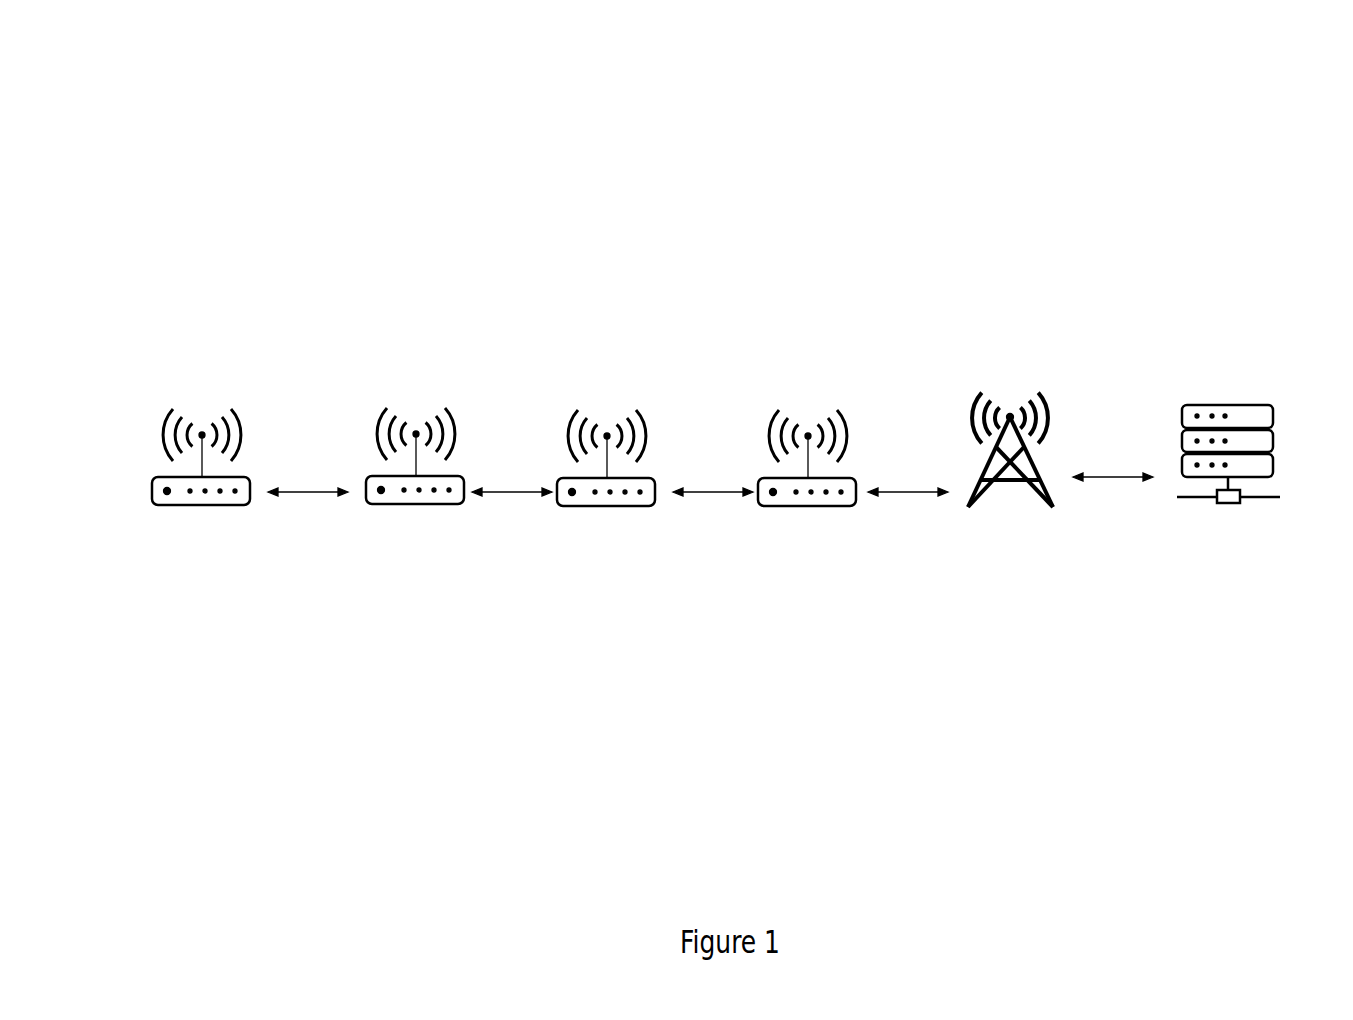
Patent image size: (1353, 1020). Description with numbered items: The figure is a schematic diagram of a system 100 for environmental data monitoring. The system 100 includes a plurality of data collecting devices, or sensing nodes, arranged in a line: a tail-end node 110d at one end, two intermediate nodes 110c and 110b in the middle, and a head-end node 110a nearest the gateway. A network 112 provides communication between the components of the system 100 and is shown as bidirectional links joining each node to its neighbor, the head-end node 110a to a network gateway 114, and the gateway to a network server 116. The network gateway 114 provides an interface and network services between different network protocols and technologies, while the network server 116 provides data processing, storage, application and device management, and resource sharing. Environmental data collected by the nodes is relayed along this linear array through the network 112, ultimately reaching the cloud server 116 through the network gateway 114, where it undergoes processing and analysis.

The system for environmental data monitoring 100 is at (272, 165).
The head-end node 110a is at (763, 430).
The intermediate node 110b is at (569, 432).
The intermediate node 110c is at (378, 428).
The tail-end node 110d is at (168, 414).
The network 112 is at (710, 474).
The network gateway 114 is at (972, 422).
The network server 116 is at (1273, 466).